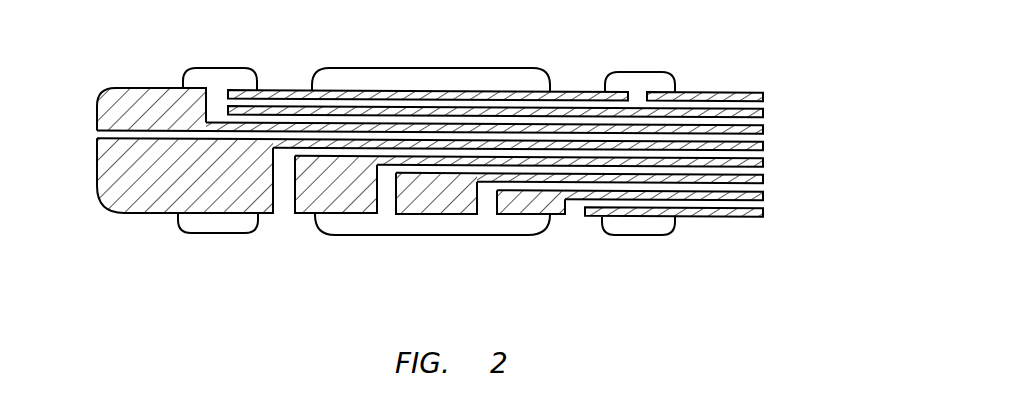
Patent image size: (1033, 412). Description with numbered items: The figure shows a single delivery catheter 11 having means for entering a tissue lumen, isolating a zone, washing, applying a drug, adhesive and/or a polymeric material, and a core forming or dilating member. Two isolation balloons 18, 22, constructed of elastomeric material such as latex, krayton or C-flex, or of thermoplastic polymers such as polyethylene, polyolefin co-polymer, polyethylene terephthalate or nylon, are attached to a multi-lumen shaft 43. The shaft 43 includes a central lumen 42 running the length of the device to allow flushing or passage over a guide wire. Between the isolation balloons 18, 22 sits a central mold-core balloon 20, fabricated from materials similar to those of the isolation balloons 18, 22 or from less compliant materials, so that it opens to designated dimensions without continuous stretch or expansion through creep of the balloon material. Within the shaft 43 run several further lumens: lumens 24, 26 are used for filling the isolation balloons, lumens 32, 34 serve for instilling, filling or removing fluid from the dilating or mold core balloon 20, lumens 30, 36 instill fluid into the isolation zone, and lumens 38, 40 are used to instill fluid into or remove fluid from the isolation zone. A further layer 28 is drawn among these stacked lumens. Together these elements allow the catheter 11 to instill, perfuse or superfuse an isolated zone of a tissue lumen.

The catheter 11 is at (438, 252).
The isolation balloon 18 is at (237, 68).
The central mold-core balloon 20 is at (450, 68).
The isolation balloon 22 is at (635, 71).
The isolation balloon filling lumen 24 is at (765, 102).
The isolation balloon filling lumen 26 is at (765, 122).
The conductive layer 28 is at (765, 146).
The isolation zone instilling lumen 30 is at (765, 163).
The mold core balloon lumen 32 is at (765, 178).
The mold core balloon lumen 34 is at (765, 193).
The isolation zone instilling lumen 36 is at (765, 210).
The isolation zone fluid lumen 38 is at (577, 225).
The isolation zone fluid lumen 40 is at (287, 223).
The central lumen 42 is at (97, 135).
The multi-lumen shaft 43 is at (130, 212).